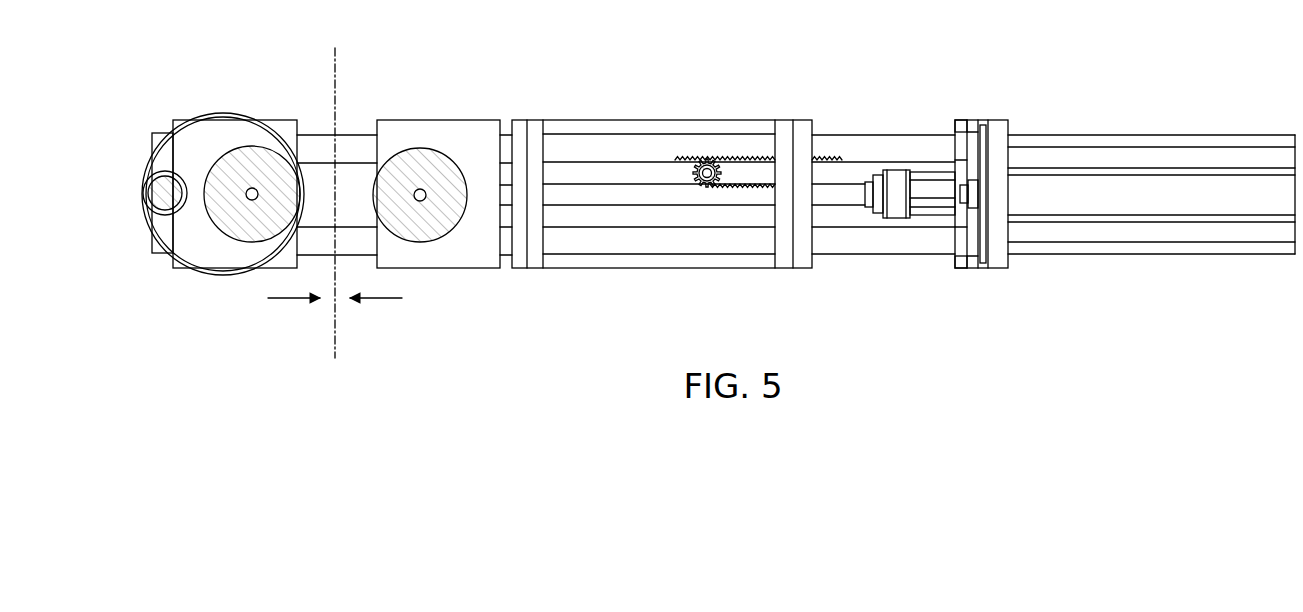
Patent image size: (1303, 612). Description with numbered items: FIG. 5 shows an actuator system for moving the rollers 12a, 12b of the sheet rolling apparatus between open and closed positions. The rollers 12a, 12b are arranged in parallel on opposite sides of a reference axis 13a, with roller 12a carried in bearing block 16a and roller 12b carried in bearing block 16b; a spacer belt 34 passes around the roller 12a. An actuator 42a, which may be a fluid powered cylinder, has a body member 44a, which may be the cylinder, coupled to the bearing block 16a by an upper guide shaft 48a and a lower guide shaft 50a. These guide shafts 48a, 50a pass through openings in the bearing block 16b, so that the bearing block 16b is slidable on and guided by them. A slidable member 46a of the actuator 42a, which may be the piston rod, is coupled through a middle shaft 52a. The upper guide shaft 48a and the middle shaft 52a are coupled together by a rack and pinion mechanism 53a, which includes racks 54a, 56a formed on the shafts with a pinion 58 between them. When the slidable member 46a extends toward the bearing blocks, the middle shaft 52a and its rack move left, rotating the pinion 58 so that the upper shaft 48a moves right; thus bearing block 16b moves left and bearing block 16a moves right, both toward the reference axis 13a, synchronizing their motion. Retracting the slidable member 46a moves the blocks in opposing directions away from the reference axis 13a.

The roller 12a is at (243, 240).
The roller 12b is at (435, 238).
The reference axis 13a is at (332, 63).
The bearing block 16a is at (277, 118).
The bearing block 16b is at (430, 118).
The spacer belt 34 is at (213, 118).
The actuator 42a is at (1082, 135).
The body member 44a is at (1018, 140).
The slidable member 46a is at (925, 212).
The upper guide shaft 48a is at (350, 143).
The lower guide shaft 50a is at (662, 195).
The middle shaft 52a is at (610, 190).
The rack and pinion mechanism 53a is at (702, 147).
The rack 54a is at (727, 160).
The rack 56a is at (738, 188).
The pinion 58 is at (706, 188).